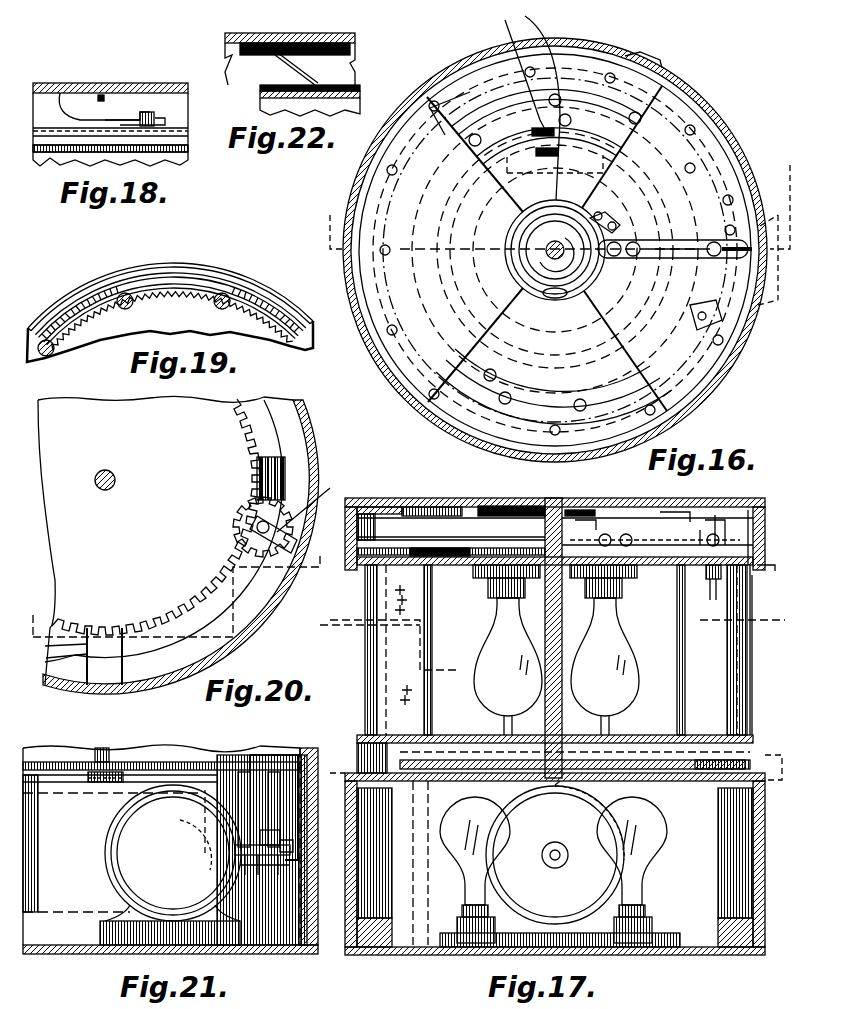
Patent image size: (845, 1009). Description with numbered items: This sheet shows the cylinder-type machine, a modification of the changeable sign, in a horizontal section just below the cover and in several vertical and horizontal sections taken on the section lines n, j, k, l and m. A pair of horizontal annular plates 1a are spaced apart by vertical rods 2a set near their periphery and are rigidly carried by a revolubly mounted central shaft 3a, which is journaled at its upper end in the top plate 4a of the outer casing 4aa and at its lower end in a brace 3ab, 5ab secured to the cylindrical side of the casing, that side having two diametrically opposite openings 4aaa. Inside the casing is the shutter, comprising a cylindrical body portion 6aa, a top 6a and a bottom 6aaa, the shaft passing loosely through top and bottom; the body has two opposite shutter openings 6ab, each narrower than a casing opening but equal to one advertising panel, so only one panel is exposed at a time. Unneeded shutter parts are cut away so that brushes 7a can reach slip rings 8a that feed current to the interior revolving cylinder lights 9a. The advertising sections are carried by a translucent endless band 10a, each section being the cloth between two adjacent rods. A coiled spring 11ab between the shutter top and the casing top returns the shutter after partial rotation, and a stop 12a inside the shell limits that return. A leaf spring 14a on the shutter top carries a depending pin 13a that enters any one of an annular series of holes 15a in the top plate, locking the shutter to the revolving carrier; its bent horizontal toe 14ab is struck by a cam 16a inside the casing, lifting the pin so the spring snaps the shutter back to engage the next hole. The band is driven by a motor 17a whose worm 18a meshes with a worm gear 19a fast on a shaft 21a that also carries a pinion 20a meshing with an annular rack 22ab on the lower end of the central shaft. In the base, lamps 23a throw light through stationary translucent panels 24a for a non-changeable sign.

In FIG. 17, the annular plates 1a is at (456, 570).
In FIG. 22, the annular plates 1a is at (345, 92).
In FIG. 17, the vertical rods 2a is at (433, 612).
In FIG. 19, the vertical rods 2a is at (145, 312).
In FIG. 17, the central shaft 3a is at (556, 498).
In FIG. 20, the central shaft 3a is at (115, 478).
In FIG. 21, the shaft support 3ab is at (102, 762).
In FIG. 17, the top plate 4a is at (462, 496).
In FIG. 21, the top plate 4a is at (80, 918).
In FIG. 16, the outer casing 4aa is at (757, 130).
In FIG. 17, the outer casing 4aa is at (758, 735).
In FIG. 19, the outer casing 4aa is at (40, 320).
In FIG. 20, the outer casing 4aa is at (300, 585).
In FIG. 17, the outer casing openings 4aaa is at (742, 592).
In FIG. 19, the outer casing openings 4aaa is at (172, 264).
In FIG. 17, the bearing block 5ab is at (700, 775).
In FIG. 20, the bearing block 5ab is at (152, 542).
In FIG. 21, the bearing block 5ab is at (95, 785).
In FIG. 16, the shutter top 6a is at (547, 248).
In FIG. 17, the shutter top 6a is at (470, 538).
In FIG. 17, the shutter body portion 6aa is at (757, 560).
In FIG. 19, the shutter body portion 6aa is at (242, 290).
In FIG. 17, the shutter openings 6ab is at (372, 660).
In FIG. 19, the shutter openings 6ab is at (138, 285).
In FIG. 20, the shutter openings 6ab is at (300, 680).
In FIG. 17, the shutter bottom 6aaa is at (436, 735).
In FIG. 16, the brushes 7a is at (554, 122).
In FIG. 22, the brushes 7a is at (316, 68).
In FIG. 16, the slip rings 8a is at (598, 150).
In FIG. 22, the slip rings 8a is at (258, 86).
In FIG. 16, the cylinder lights 9a is at (520, 275).
In FIG. 17, the cylinder lights 9a is at (556, 650).
In FIG. 16, the endless band 10a is at (448, 100).
In FIG. 19, the endless band 10a is at (245, 315).
In FIG. 16, the coiled spring 11ab is at (552, 300).
In FIG. 17, the coiled spring 11ab is at (590, 510).
In FIG. 16, the stop 12a is at (665, 68).
In FIG. 17, the depending pin 13a is at (710, 580).
In FIG. 16, the leaf spring 14a is at (620, 240).
In FIG. 17, the leaf spring 14a is at (705, 515).
In FIG. 18, the leaf spring 14a is at (128, 140).
In FIG. 18, the horizontal toe 14ab is at (150, 112).
In FIG. 16, the holes 15a is at (475, 134).
In FIG. 17, the holes 15a is at (700, 575).
In FIG. 18, the cam 16a is at (110, 120).
In FIG. 17, the motor 17a is at (555, 855).
In FIG. 21, the motor 17a is at (132, 865).
In FIG. 21, the worm 18a is at (245, 835).
In FIG. 21, the worm gear 19a is at (235, 852).
In FIG. 20, the pinion 20a is at (250, 522).
In FIG. 21, the pinion 20a is at (290, 755).
In FIG. 17, the shaft 21a is at (590, 785).
In FIG. 20, the shaft 21a is at (300, 500).
In FIG. 21, the shaft 21a is at (300, 805).
In FIG. 17, the annular rack 22ab is at (435, 782).
In FIG. 21, the annular rack 22ab is at (180, 762).
In FIG. 17, the lamps 23a is at (560, 872).
In FIG. 17, the translucent panels 24a is at (753, 848).
In FIG. 21, the translucent panels 24a is at (100, 862).
In FIG. 16, the section line n- n is at (558, 196).
In FIG. 16, the section line j- j is at (737, 291).
In FIG. 17, the section line k- k is at (556, 640).
In FIG. 20, the section line l- l is at (173, 584).
In FIG. 17, the section line m- m is at (562, 778).